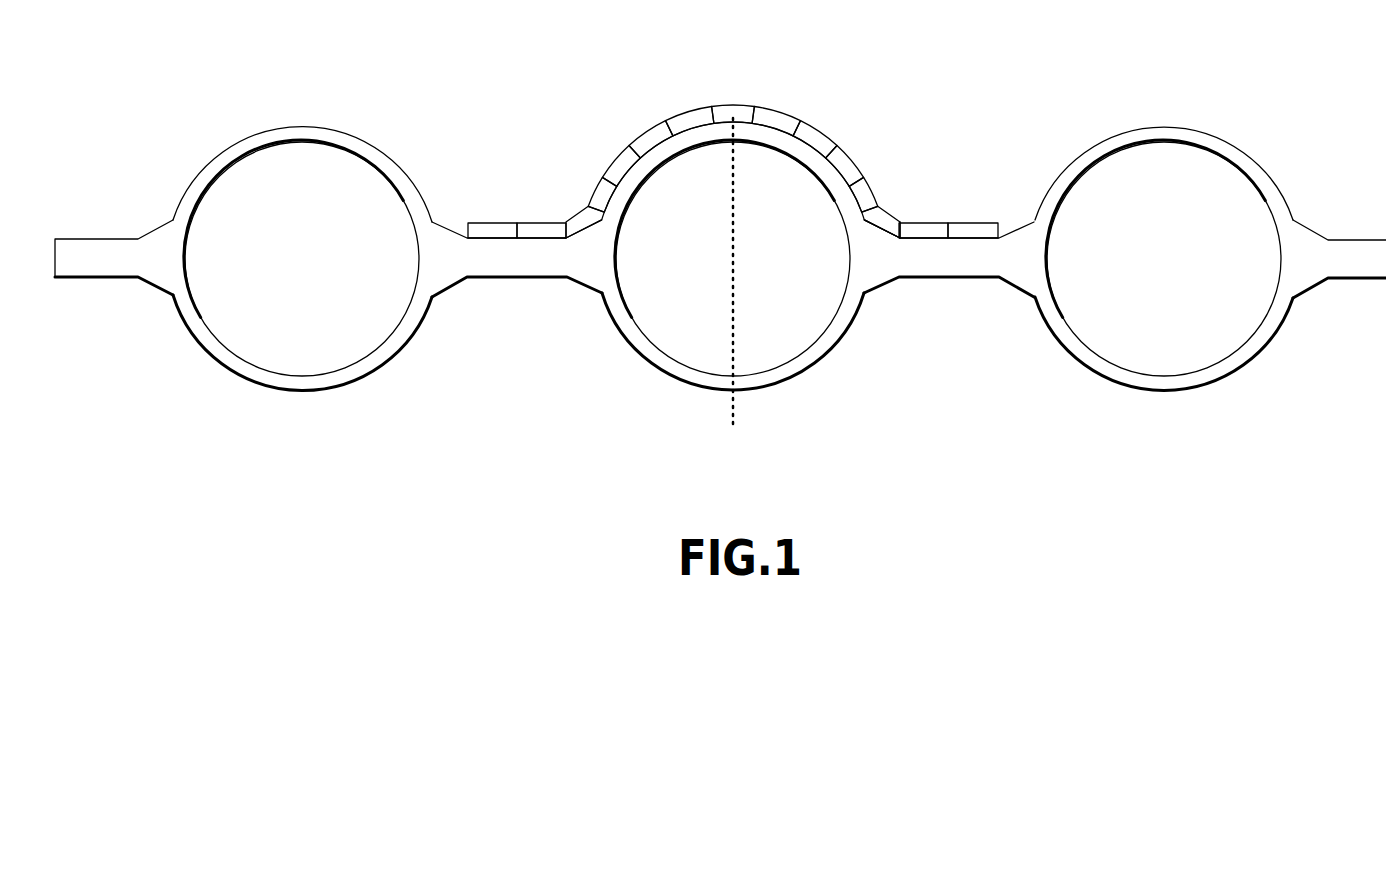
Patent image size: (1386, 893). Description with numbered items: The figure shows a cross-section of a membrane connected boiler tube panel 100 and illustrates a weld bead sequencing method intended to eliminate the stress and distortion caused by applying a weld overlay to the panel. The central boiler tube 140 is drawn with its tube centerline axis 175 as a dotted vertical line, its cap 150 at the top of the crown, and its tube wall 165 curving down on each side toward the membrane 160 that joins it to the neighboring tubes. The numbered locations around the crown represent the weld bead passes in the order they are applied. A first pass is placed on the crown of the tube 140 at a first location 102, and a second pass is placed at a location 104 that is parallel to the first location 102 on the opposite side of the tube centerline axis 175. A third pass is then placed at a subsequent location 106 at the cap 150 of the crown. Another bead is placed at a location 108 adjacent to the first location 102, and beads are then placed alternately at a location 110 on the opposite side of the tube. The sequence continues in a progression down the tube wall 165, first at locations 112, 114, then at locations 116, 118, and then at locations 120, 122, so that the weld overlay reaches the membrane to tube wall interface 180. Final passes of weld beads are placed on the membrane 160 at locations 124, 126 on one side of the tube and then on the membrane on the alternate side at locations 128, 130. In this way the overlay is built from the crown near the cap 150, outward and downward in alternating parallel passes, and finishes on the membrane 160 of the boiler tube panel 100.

The boiler tube panel 100 is at (193, 178).
The first location 102 is at (692, 125).
The second location 104 is at (772, 122).
The subsequent location 106 is at (734, 115).
The weld bead location 108 is at (645, 138).
The weld bead location 110 is at (820, 138).
The weld bead location 112 is at (613, 163).
The weld bead location 114 is at (848, 165).
The weld bead location 116 is at (600, 192).
The weld bead location 118 is at (868, 190).
The weld bead location 120 is at (583, 212).
The weld bead location 122 is at (885, 207).
The membrane weld bead location 124 is at (535, 230).
The membrane weld bead location 126 is at (480, 232).
The membrane weld bead location 128 is at (930, 233).
The membrane weld bead location 130 is at (985, 232).
The tube 140 is at (613, 212).
The cap 150 is at (733, 123).
The membrane 160 is at (967, 258).
The tube wall 165 is at (833, 185).
The tube centerline axis 175 is at (733, 413).
The membrane to tube wall interface 180 is at (875, 237).